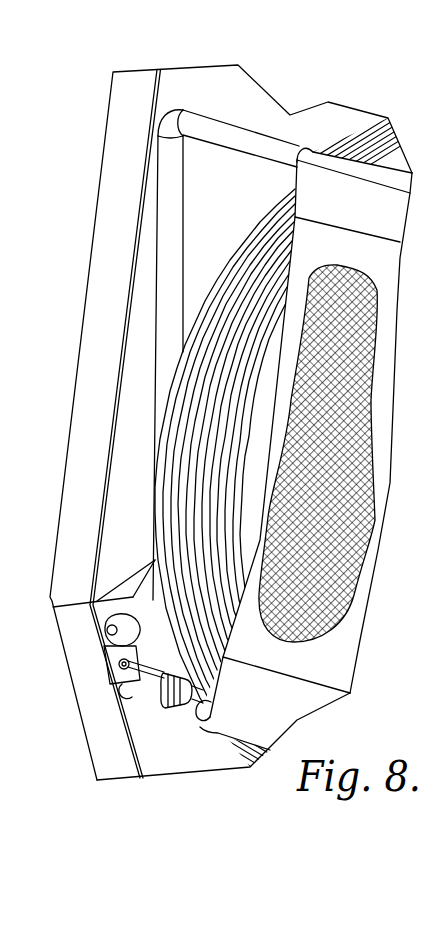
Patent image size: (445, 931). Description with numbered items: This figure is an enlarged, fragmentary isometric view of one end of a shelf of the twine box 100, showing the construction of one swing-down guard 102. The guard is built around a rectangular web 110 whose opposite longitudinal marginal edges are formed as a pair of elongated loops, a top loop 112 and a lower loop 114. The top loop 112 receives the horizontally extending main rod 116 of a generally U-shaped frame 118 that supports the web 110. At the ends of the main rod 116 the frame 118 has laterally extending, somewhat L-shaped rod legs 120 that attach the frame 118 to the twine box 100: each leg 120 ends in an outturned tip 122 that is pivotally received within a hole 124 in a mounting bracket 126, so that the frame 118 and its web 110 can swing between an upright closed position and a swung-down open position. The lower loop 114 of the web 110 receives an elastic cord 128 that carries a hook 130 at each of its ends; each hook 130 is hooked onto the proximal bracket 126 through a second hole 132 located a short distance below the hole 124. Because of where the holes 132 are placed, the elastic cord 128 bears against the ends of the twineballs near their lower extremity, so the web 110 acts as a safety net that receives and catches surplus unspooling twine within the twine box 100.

The twine box 100 is at (100, 126).
The swing-down guard 102 is at (394, 312).
The web 110 is at (380, 503).
The top loop 112 is at (323, 180).
The lower loop 114 is at (230, 727).
The main rod 116 is at (250, 140).
The frame 118 is at (199, 105).
The rod leg 120 is at (172, 230).
The outturned tip 122 is at (117, 627).
The hole 124 is at (118, 658).
The mounting bracket 126 is at (110, 681).
The elastic cord 128 is at (195, 714).
The hook 130 is at (150, 677).
The hole 132 is at (122, 664).